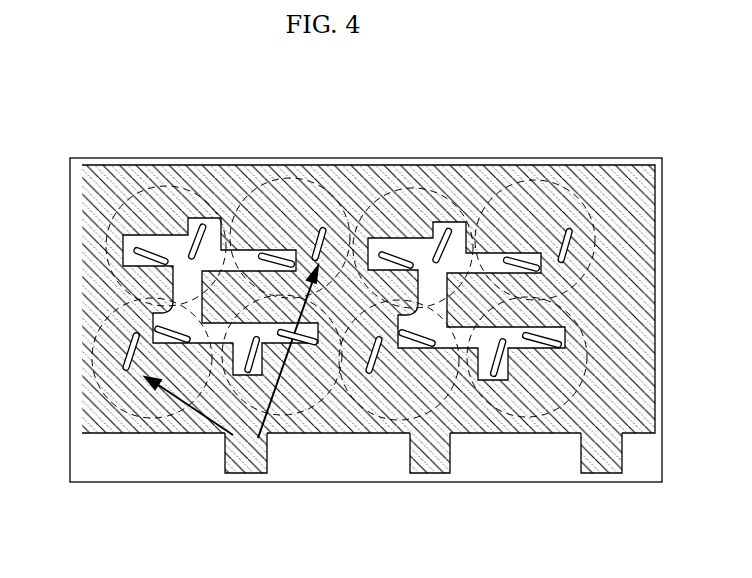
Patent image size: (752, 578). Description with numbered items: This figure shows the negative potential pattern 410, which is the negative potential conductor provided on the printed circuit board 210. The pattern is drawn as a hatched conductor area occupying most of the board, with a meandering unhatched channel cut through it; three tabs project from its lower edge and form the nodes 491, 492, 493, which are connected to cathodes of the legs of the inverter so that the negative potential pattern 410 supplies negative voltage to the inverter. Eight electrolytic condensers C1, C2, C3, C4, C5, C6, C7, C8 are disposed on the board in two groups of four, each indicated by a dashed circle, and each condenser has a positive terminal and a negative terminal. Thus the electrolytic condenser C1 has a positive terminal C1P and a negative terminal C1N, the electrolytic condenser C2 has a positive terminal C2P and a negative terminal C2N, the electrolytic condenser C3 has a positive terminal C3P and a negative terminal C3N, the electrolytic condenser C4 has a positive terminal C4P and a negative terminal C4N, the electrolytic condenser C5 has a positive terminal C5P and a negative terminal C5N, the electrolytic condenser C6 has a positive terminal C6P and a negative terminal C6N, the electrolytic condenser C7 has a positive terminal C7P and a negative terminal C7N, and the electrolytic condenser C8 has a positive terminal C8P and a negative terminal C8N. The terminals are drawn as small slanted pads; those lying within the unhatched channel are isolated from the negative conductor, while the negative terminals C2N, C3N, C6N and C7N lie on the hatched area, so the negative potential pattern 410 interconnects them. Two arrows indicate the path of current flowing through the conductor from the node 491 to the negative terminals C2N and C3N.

The printed circuit board 210 is at (622, 157).
The negative potential pattern 410 is at (640, 213).
The node 491 is at (242, 455).
The node 492 is at (427, 467).
The node 493 is at (597, 468).
The electrolytic condenser C1 is at (168, 187).
The electrolytic condenser C2 is at (262, 187).
The electrolytic condenser C3 is at (92, 392).
The electrolytic condenser C4 is at (283, 405).
The electrolytic condenser C5 is at (418, 188).
The electrolytic condenser C6 is at (540, 182).
The electrolytic condenser C7 is at (397, 420).
The electrolytic condenser C8 is at (573, 372).
The positive terminal C1P is at (148, 250).
The negative terminal C1N is at (200, 236).
The positive terminal C2P is at (278, 255).
The negative terminal C2N is at (325, 238).
The positive terminal C3P is at (158, 329).
The negative terminal C3N is at (125, 350).
The positive terminal C4P is at (300, 345).
The negative terminal C4N is at (249, 378).
The positive terminal C5P is at (394, 254).
The negative terminal C5N is at (446, 242).
The positive terminal C6P is at (516, 259).
The negative terminal C6N is at (566, 240).
The positive terminal C7P is at (432, 344).
The negative terminal C7N is at (372, 368).
The positive terminal C8P is at (572, 331).
The negative terminal C8N is at (501, 378).